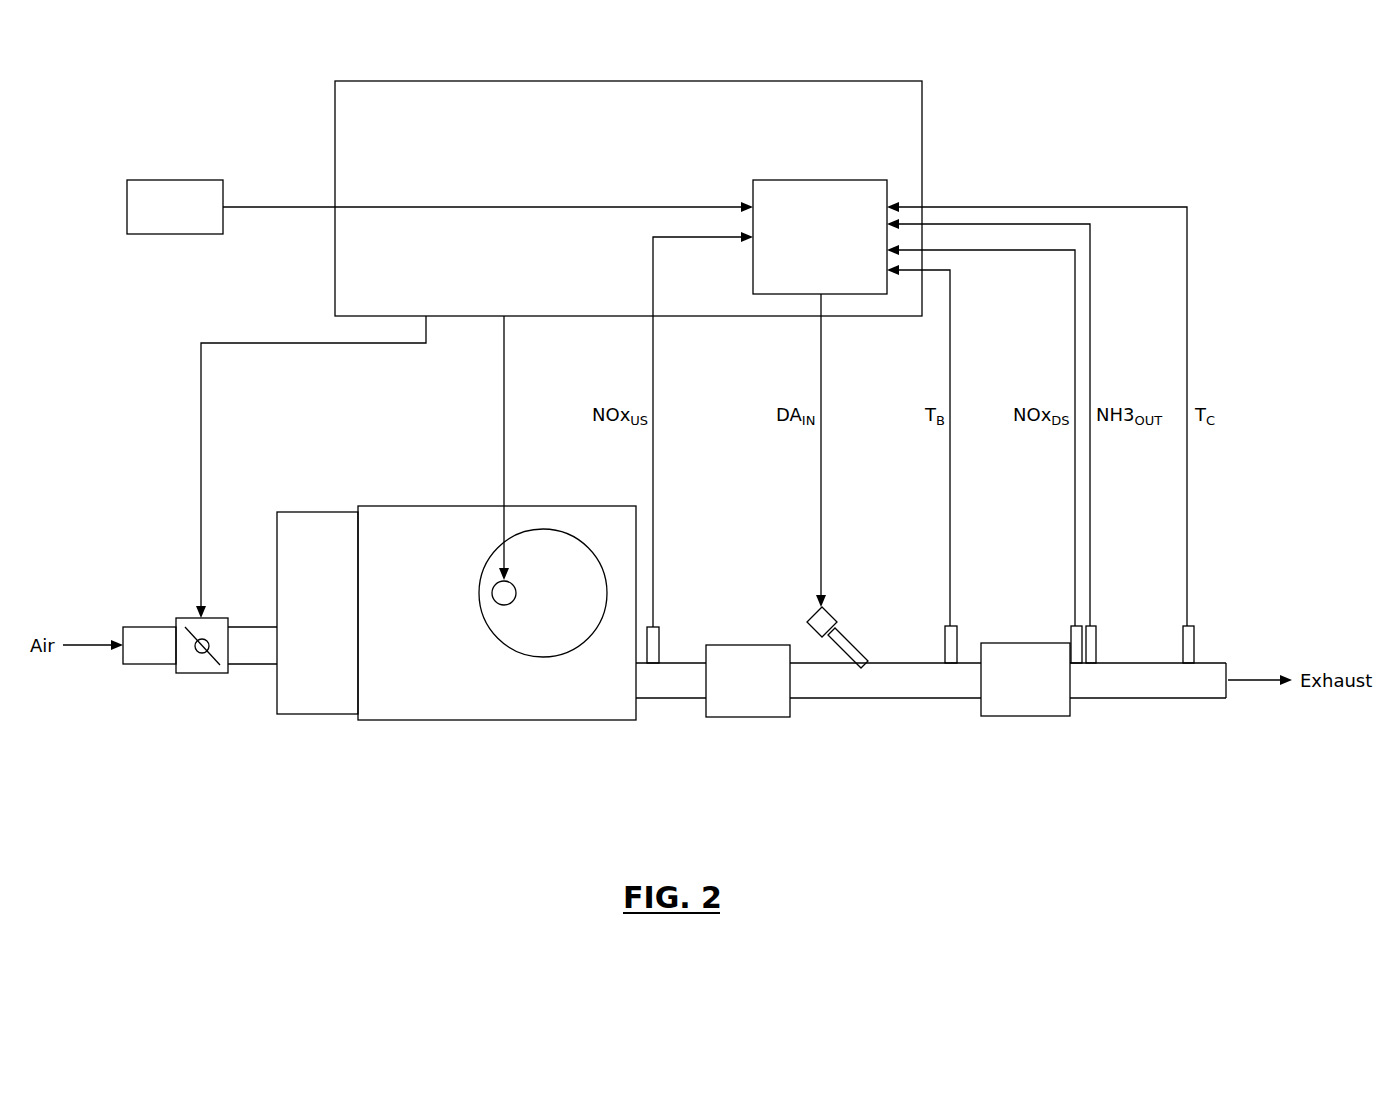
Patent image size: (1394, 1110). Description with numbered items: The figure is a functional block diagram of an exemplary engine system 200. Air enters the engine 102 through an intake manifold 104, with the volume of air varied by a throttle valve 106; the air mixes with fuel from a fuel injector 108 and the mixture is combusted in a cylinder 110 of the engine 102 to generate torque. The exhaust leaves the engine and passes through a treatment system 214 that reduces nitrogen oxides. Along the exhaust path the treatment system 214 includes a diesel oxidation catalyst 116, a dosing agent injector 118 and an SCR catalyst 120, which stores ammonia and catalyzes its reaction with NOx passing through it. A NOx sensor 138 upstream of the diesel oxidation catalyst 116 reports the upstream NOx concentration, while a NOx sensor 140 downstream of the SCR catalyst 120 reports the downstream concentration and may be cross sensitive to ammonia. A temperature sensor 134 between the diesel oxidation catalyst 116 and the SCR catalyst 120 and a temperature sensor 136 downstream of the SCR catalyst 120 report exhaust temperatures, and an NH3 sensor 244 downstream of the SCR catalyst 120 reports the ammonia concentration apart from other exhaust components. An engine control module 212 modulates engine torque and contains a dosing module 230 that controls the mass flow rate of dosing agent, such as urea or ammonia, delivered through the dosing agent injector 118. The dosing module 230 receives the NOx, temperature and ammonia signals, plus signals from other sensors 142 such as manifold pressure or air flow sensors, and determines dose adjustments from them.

The engine system 200 is at (154, 50).
The engine control module 212 is at (627, 81).
The dosing module 230 is at (822, 180).
The other sensors 142 is at (178, 180).
The engine 102 is at (422, 506).
The intake manifold 104 is at (314, 512).
The throttle valve 106 is at (196, 618).
The fuel injector 108 is at (493, 586).
The cylinder 110 is at (556, 657).
The diesel oxidation catalyst 116 is at (753, 645).
The dosing agent injector 118 is at (812, 617).
The SCR catalyst 120 is at (1024, 716).
The temperature sensor 134 is at (950, 665).
The temperature sensor 136 is at (1188, 665).
The NOx sensor 138 is at (655, 665).
The NOx sensor 140 is at (1070, 632).
The NH3 sensor 244 is at (1097, 632).
The treatment system 214 is at (1002, 834).